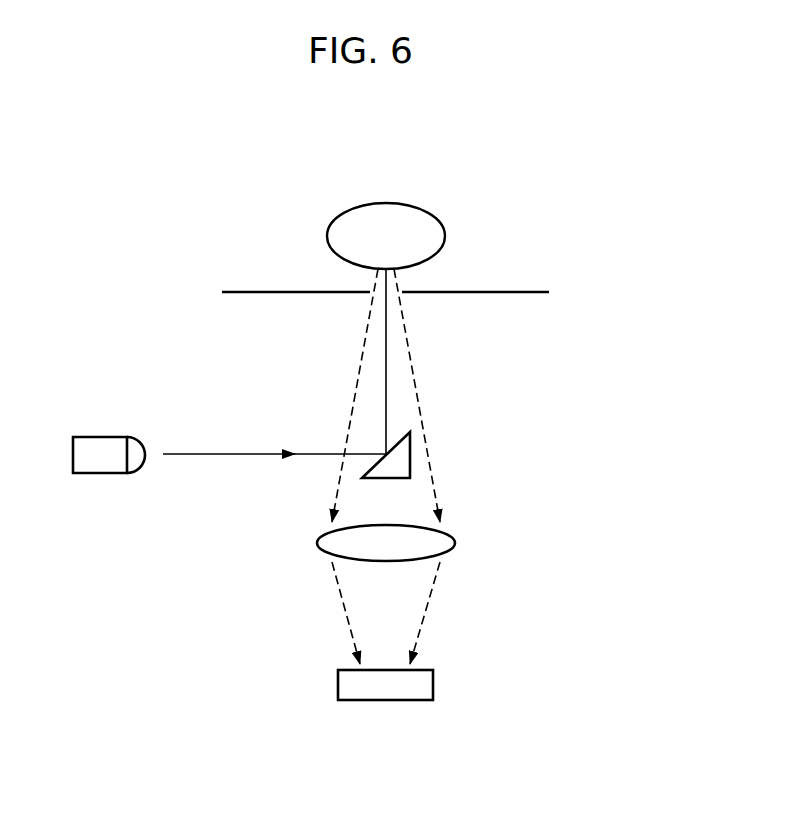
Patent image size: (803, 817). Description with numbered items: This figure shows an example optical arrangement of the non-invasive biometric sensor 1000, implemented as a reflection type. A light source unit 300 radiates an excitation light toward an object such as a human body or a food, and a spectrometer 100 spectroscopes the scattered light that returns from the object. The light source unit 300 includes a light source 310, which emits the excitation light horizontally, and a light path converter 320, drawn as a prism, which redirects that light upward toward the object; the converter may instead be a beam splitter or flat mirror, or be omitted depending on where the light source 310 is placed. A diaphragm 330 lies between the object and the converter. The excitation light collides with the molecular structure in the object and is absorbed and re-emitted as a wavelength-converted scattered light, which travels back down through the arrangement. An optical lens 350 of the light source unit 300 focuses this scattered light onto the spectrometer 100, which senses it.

The non-invasive biometric sensor 1000 is at (566, 206).
The light source unit 300 is at (191, 389).
The light source 310 is at (102, 474).
The light path converter 320 is at (405, 460).
The diaphragm 330 is at (520, 293).
The optical lens 350 is at (447, 543).
The spectrometer 100 is at (433, 685).